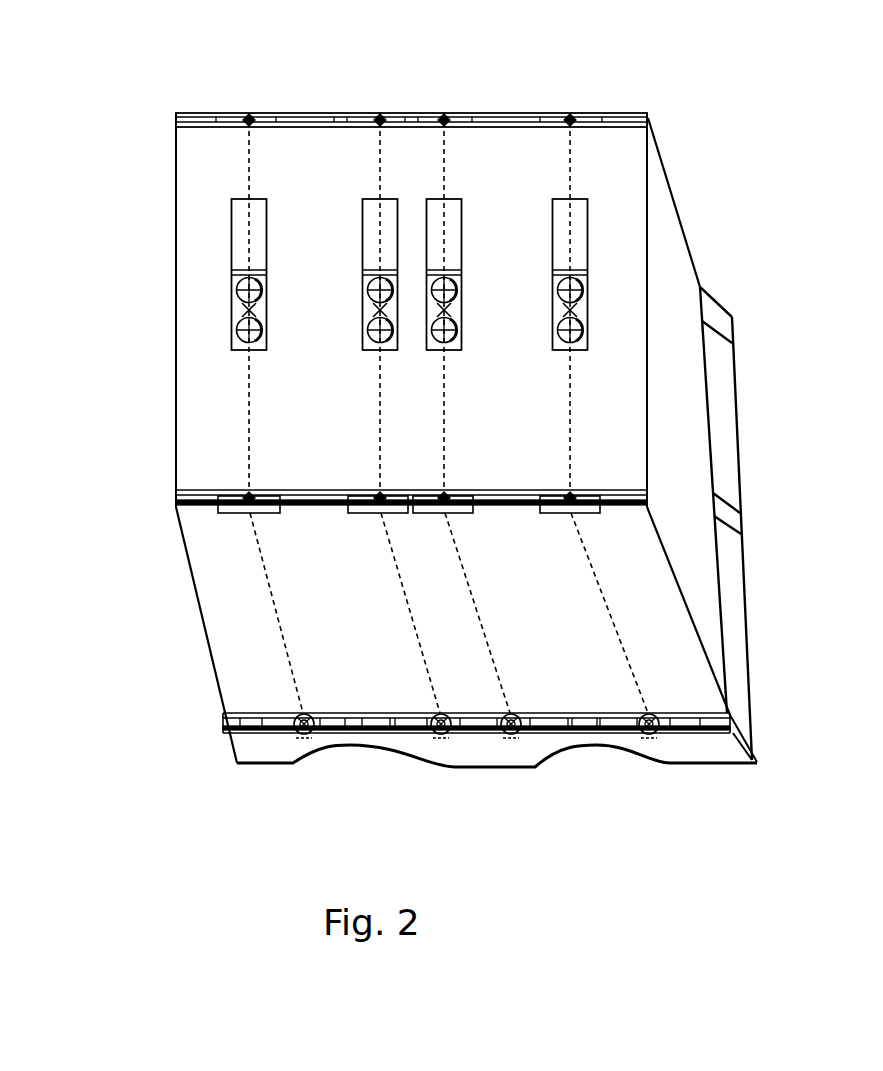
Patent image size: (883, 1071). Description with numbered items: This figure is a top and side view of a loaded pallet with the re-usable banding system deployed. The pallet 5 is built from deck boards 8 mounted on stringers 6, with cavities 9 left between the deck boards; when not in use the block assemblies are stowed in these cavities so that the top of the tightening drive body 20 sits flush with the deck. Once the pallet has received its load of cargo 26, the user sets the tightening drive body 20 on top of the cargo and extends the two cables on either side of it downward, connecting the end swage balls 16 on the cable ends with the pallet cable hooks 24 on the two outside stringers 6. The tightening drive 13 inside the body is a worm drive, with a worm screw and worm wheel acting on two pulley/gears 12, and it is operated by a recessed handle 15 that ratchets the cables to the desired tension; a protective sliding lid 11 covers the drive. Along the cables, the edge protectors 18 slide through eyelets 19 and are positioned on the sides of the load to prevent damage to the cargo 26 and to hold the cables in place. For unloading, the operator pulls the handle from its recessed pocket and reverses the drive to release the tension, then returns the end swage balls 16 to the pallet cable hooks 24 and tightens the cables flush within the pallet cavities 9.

The pallet 5 is at (745, 430).
The stringer 6 is at (750, 510).
The deck board 8 is at (693, 723).
The cavity 9 is at (372, 727).
The protective sliding lid 11 is at (227, 203).
The pulley/gear 12 is at (227, 282).
The tightening drive 13 is at (232, 311).
The recessed handle 15 is at (597, 310).
The end swage ball 16 is at (652, 713).
The edge protector 18 is at (592, 490).
The eyelet 19 is at (448, 113).
The tightening drive body 20 is at (270, 282).
The pallet cable hook 24 is at (287, 710).
The cargo 26 is at (500, 400).